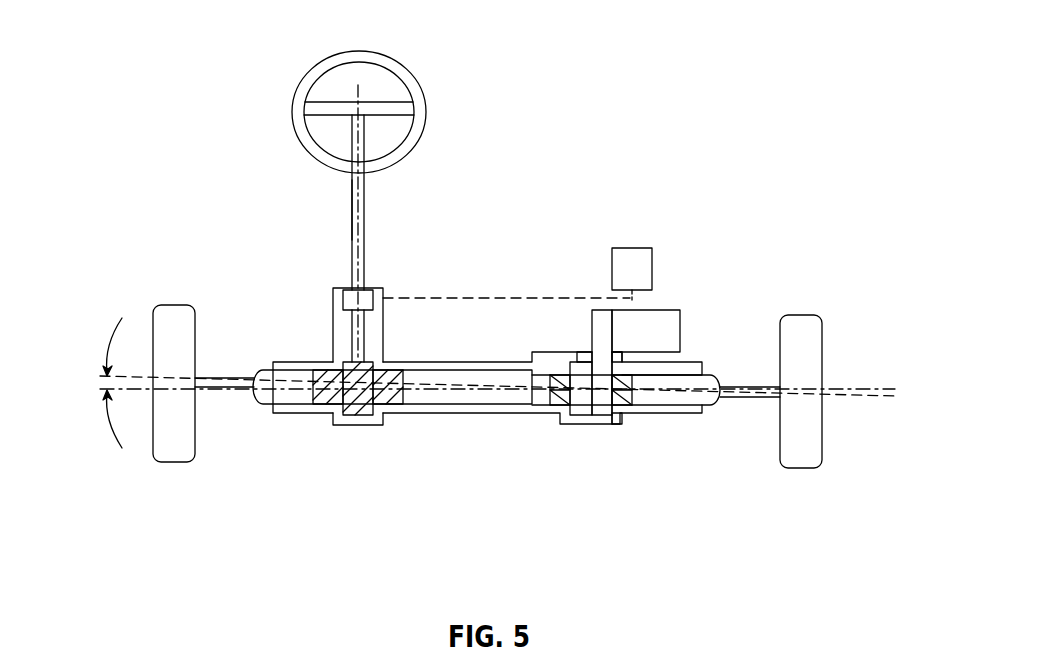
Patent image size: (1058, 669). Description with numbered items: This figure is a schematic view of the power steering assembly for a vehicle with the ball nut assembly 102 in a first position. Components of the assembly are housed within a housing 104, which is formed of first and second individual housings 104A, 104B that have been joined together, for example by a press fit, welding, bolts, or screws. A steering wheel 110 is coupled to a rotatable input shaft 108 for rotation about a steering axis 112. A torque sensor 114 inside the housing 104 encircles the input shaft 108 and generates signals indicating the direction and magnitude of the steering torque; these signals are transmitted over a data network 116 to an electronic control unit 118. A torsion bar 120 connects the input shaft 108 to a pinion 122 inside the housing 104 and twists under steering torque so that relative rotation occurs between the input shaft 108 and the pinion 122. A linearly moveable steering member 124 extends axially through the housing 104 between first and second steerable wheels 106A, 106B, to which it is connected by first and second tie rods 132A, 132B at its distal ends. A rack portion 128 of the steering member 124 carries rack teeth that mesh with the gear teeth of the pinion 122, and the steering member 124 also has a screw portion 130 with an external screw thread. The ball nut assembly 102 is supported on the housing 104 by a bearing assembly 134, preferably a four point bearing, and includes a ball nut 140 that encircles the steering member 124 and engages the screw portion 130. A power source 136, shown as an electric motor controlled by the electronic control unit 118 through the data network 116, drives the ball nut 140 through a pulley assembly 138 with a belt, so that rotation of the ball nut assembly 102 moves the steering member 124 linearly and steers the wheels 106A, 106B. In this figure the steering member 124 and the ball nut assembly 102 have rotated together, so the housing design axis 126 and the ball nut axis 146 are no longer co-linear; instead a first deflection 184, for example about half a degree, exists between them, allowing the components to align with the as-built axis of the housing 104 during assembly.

The ball nut assembly 102 is at (606, 452).
The housing 104 is at (393, 360).
The first individual housing 104A is at (510, 413).
The second individual housing 104B is at (533, 406).
The first steerable wheel 106A is at (170, 305).
The second steerable wheel 106B is at (801, 315).
The input shaft 108 is at (352, 226).
The steering wheel 110 is at (393, 58).
The steering axis 112 is at (361, 192).
The torque sensor 114 is at (348, 288).
The data network 116 is at (412, 298).
The electronic control unit 118 is at (631, 248).
The torsion bar 120 is at (352, 336).
The pinion 122 is at (358, 415).
The steering member 124 is at (462, 413).
The housing design axis 126 is at (857, 388).
The rack portion 128 is at (320, 404).
The screw portion 130 is at (622, 420).
The first tie rod 132A is at (228, 377).
The second tie rod 132B is at (752, 386).
The bearing assembly 134 is at (565, 351).
The power source 136 is at (667, 309).
The pulley assembly 138 is at (597, 310).
The ball nut 140 is at (583, 414).
The ball nut axis 146 is at (860, 397).
The first deflection 184 is at (107, 423).